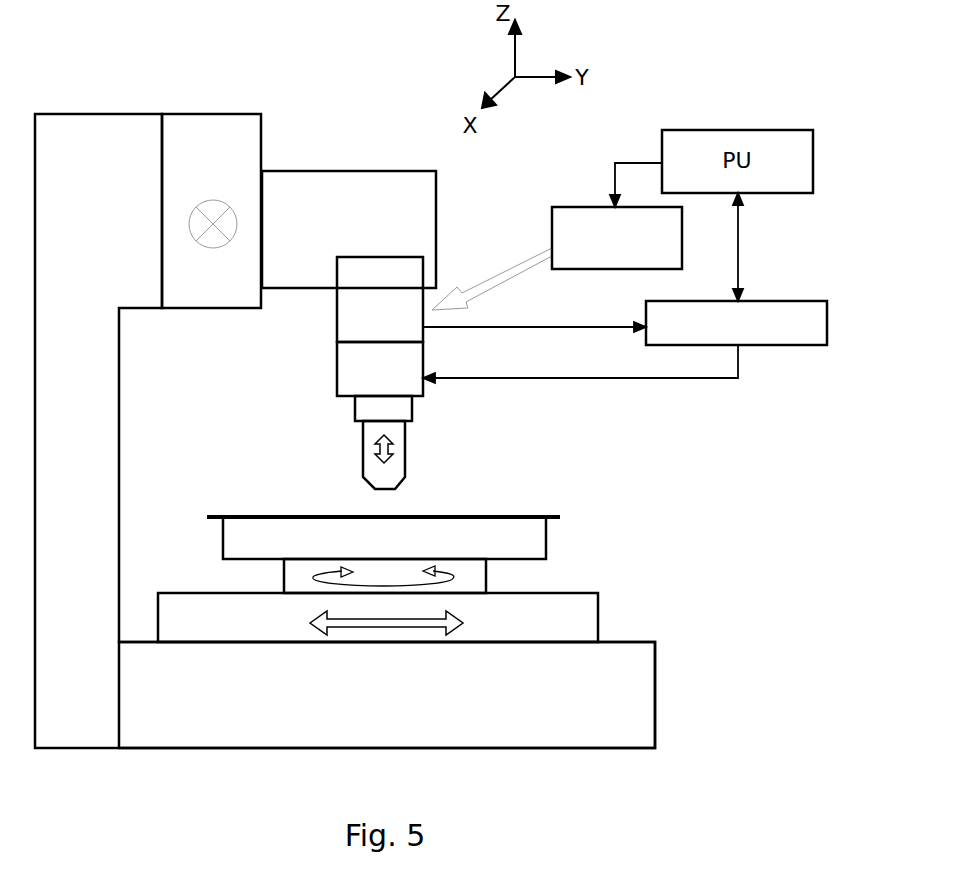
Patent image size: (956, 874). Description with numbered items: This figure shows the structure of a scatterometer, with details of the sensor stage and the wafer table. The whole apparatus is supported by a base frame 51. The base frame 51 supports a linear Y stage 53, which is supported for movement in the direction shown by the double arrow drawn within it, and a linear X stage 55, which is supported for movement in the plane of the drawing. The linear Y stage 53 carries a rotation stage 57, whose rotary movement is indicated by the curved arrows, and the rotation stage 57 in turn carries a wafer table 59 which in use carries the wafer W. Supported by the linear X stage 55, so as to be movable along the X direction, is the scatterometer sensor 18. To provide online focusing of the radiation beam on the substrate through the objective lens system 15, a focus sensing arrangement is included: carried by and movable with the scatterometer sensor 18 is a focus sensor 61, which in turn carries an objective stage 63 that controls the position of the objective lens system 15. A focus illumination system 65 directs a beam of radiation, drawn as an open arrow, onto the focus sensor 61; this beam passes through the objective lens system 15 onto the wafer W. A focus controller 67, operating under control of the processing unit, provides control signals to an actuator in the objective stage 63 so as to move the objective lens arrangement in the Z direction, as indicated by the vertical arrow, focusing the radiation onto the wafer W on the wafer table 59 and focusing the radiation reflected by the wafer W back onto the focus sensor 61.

The objective lens system 15 is at (368, 445).
The scatterometer sensor 18 is at (382, 175).
The base frame 51 is at (640, 695).
The linear Y stage 53 is at (600, 620).
The linear X stage 55 is at (225, 302).
The rotation stage 57 is at (486, 580).
The wafer table 59 is at (530, 546).
The focus sensor 61 is at (348, 334).
The objective stage 63 is at (348, 387).
The focus illumination system 65 is at (617, 238).
The focus controller 67 is at (736, 323).
The wafer W is at (515, 516).